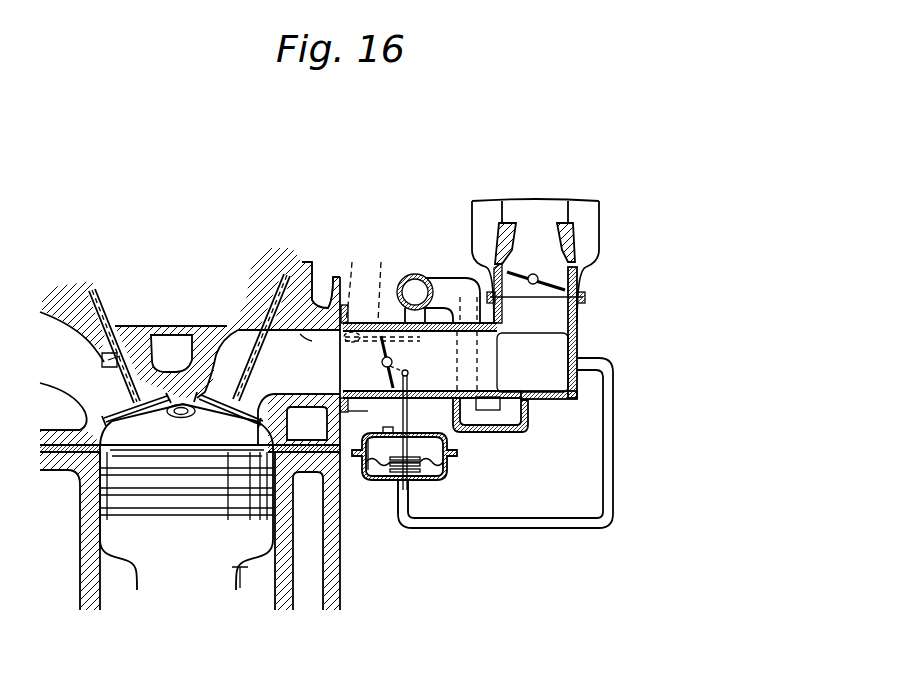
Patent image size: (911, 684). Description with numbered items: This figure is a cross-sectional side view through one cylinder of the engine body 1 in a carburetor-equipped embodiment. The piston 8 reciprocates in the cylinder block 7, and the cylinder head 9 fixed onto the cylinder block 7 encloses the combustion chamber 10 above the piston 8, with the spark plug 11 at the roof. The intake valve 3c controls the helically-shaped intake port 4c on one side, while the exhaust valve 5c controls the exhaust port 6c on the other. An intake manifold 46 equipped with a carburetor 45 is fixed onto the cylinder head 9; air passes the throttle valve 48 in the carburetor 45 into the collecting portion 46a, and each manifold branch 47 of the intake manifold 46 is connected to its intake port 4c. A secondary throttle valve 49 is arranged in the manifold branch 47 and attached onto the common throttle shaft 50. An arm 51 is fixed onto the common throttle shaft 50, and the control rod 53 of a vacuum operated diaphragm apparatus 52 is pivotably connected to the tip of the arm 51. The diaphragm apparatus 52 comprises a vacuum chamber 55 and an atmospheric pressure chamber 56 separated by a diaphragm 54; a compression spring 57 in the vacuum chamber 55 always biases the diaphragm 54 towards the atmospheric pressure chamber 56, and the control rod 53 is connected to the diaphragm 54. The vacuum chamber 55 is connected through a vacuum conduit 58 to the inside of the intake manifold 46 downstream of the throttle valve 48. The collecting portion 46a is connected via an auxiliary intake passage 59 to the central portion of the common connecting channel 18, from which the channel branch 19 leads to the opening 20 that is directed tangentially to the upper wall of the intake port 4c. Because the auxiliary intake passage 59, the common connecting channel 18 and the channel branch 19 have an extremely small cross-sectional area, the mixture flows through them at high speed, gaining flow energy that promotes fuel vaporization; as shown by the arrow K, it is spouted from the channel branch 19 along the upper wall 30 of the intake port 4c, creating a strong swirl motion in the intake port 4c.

The cylinder head 9 is at (254, 308).
The engine body 1 is at (343, 545).
The cylinder block 7 is at (340, 583).
The combustion chamber 10 is at (222, 437).
The piston 8 is at (240, 586).
The exhaust valve 5c is at (139, 372).
The intake valve 3c is at (248, 378).
The spark plug 11 is at (180, 418).
The exhaust port 6c is at (82, 362).
The intake port 4c is at (299, 384).
The upper wall of the inlet passage portion 30 is at (304, 338).
The arrow K is at (310, 275).
The manifold branch 47 is at (371, 398).
The opening of the channel branch 20 is at (350, 280).
The channel branch 19 is at (382, 280).
The common connecting channel 18 is at (416, 277).
The common throttle shaft 50 is at (380, 357).
The secondary throttle valve 49 is at (386, 380).
The arm 51 is at (409, 365).
The control rod 53 is at (409, 412).
The carburetor 45 is at (533, 206).
The throttle valve 48 is at (576, 284).
The collecting portion 46a is at (560, 367).
The intake manifold 46 is at (562, 402).
The auxiliary intake passage 59 is at (495, 421).
The vacuum conduit 58 is at (526, 530).
The vacuum operated diaphragm apparatus 52 is at (452, 480).
The diaphragm 54 is at (452, 465).
The compression spring 57 is at (418, 476).
The atmospheric pressure chamber 56 is at (368, 470).
The vacuum chamber 55 is at (395, 500).